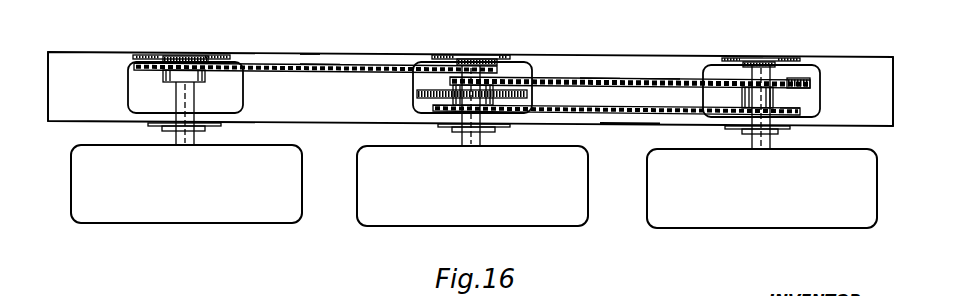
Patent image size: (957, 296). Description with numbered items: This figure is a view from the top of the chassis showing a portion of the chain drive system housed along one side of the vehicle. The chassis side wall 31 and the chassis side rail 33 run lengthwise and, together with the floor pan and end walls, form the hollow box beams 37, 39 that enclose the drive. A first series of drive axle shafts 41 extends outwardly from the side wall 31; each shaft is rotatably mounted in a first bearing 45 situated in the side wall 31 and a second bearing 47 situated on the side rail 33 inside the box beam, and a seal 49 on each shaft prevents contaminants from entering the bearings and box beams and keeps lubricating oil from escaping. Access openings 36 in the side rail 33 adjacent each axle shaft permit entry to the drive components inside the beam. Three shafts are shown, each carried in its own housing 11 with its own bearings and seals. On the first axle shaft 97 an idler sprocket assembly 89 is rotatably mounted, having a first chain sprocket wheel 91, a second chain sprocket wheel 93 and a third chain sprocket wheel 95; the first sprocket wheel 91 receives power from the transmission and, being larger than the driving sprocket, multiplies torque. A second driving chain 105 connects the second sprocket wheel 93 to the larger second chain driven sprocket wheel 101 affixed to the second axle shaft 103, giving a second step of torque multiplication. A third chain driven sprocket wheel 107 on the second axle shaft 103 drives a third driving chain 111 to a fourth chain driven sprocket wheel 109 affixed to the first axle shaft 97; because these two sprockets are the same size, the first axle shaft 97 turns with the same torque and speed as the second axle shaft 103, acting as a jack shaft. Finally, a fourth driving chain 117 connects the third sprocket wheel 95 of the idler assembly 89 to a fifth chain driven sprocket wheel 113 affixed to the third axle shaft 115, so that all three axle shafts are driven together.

The housing box 11 is at (105, 183).
The side wall 31 is at (338, 123).
The chassis side rail 33 is at (300, 53).
The access opening 36 is at (212, 90).
The hollow box beam 37 is at (308, 90).
The hollow box beam 39 is at (68, 85).
The first series of drive axle shafts 41 is at (877, 145).
The first bearing 45 is at (148, 125).
The second bearing 47 is at (185, 58).
The seal 49 is at (205, 128).
The idler sprocket assembly 89 is at (533, 95).
The first chain sprocket wheel 91 is at (588, 85).
The second chain sprocket wheel 93 is at (422, 60).
The third chain sprocket wheel 95 is at (530, 72).
The first axle shaft 97 is at (472, 147).
The second chain driven sprocket wheel 101 is at (793, 82).
The second axle shaft 103 is at (762, 150).
The second driving chain 105 is at (655, 82).
The third chain driven sprocket wheel 107 is at (803, 110).
The fourth chain driven sprocket wheel 109 is at (433, 108).
The third driving chain 111 is at (630, 123).
The fifth chain driven sprocket wheel 113 is at (137, 58).
The third axle shaft 115 is at (187, 146).
The fourth driving chain 117 is at (268, 65).